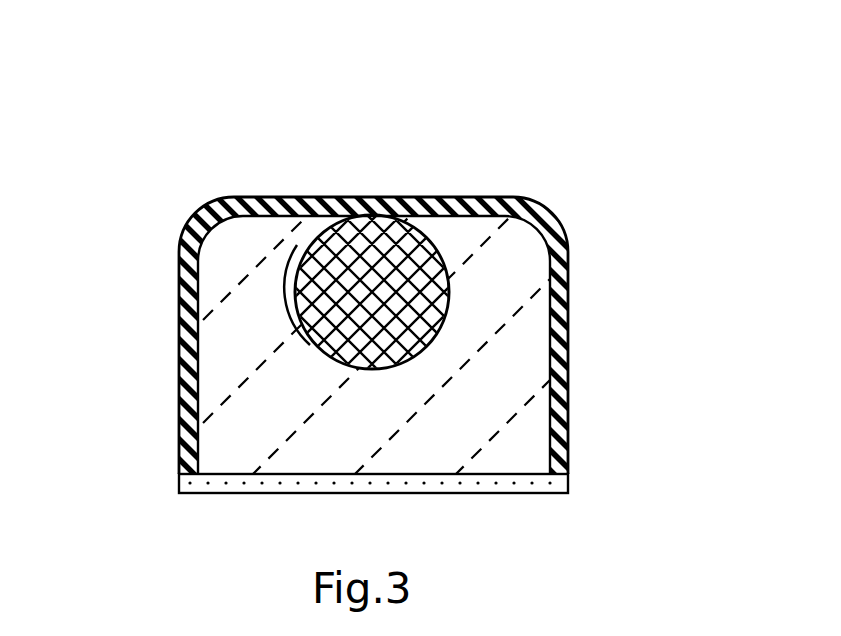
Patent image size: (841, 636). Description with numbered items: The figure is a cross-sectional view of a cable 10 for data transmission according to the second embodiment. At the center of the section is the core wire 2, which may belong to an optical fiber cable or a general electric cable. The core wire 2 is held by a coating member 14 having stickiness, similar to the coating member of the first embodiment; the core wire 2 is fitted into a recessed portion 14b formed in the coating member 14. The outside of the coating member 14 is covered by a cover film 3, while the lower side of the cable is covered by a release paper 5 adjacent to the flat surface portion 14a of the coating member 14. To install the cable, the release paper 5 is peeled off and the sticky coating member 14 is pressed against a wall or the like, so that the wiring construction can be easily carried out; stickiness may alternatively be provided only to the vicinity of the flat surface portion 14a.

The cable 10 is at (367, 318).
The core wire 2 is at (373, 238).
The cover film 3 is at (554, 221).
The coating member 14 is at (522, 287).
The flat surface portion 14a is at (240, 477).
The recessed portion 14b is at (297, 245).
The release paper 5 is at (568, 480).